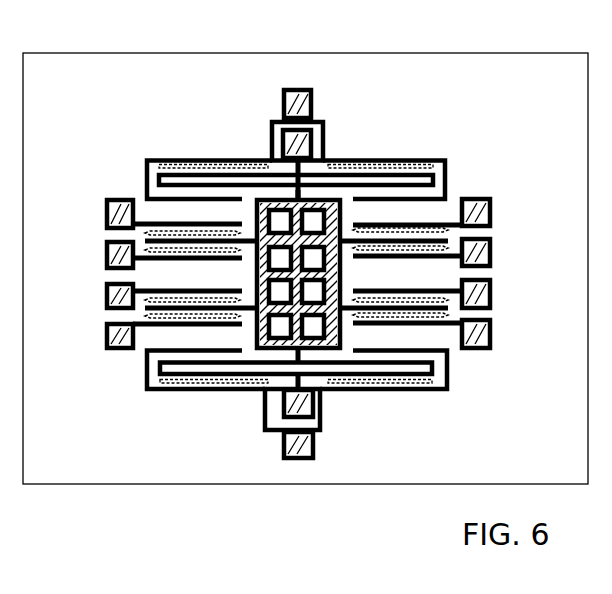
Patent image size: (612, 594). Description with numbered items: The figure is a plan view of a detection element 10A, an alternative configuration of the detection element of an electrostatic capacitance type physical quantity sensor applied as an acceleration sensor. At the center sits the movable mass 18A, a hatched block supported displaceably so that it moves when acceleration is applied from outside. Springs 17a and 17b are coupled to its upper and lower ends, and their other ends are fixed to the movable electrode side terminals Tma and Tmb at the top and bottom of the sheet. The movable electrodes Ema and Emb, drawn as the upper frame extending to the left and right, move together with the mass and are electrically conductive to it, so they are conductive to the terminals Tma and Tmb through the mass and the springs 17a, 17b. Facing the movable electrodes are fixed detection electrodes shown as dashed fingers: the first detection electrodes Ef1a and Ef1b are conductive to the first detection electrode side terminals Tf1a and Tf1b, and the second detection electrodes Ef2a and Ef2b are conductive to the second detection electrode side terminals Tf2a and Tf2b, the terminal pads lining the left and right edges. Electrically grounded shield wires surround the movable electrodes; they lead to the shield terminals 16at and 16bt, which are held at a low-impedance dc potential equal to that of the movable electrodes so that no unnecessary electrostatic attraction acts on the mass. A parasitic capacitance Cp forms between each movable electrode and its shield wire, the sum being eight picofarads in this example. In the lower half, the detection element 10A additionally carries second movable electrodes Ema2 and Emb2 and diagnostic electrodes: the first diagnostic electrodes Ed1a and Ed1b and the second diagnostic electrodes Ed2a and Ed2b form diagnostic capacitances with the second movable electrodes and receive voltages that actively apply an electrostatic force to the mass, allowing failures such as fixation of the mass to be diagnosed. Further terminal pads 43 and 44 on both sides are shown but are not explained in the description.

The detection element 10A is at (89, 54).
The shield terminal 16at is at (283, 92).
The movable electrode side terminal Tma is at (314, 106).
The spring 17a is at (269, 156).
The parasitic capacitance Cp is at (272, 158).
The movable electrode body 18A is at (343, 200).
The first detection electrode Ef1a is at (229, 221).
The movable electrode Ema is at (215, 221).
The second detection electrode Ef2a is at (214, 221).
The first detection electrode side terminal Tf1a is at (105, 211).
The second detection electrode side terminal Tf2a is at (105, 258).
The terminal 43 is at (105, 292).
The terminal 44 is at (105, 332).
The first diagnostic electrode Ed1a is at (190, 312).
The second diagnostic electrode Ed2a is at (240, 350).
The second movable electrode Ema2 is at (148, 389).
The spring 17b is at (266, 396).
The movable electrode side terminal Tmb is at (283, 441).
The shield terminal 16bt is at (318, 443).
The first detection electrode Ef1b is at (377, 222).
The movable electrode Emb is at (432, 168).
The second detection electrode Ef2b is at (422, 248).
The first detection electrode side terminal Tf1b is at (491, 213).
The second detection electrode side terminal Tf2b is at (491, 254).
The first diagnostic electrode Ed1b is at (427, 320).
The second movable electrode Emb2 is at (447, 376).
The second diagnostic electrode Ed2b is at (432, 302).